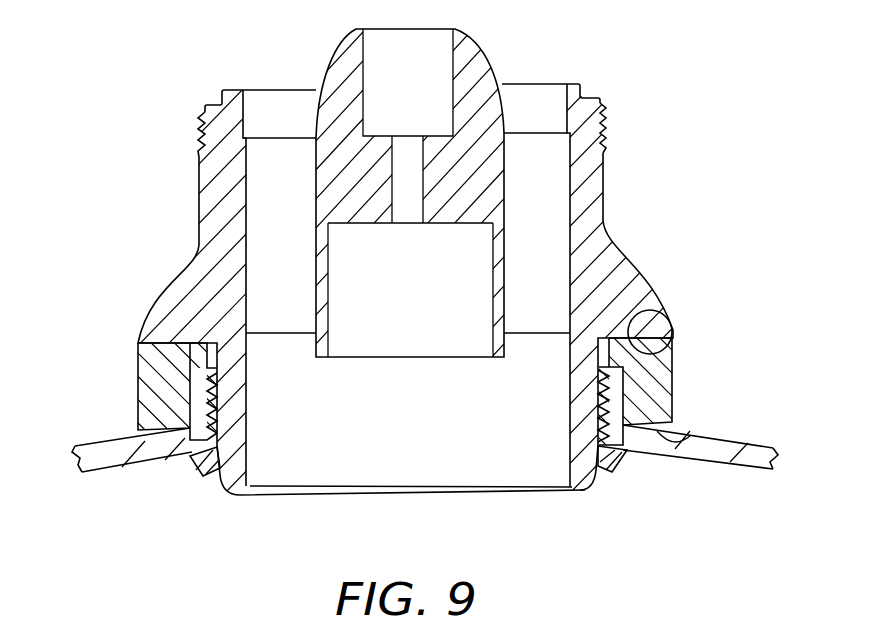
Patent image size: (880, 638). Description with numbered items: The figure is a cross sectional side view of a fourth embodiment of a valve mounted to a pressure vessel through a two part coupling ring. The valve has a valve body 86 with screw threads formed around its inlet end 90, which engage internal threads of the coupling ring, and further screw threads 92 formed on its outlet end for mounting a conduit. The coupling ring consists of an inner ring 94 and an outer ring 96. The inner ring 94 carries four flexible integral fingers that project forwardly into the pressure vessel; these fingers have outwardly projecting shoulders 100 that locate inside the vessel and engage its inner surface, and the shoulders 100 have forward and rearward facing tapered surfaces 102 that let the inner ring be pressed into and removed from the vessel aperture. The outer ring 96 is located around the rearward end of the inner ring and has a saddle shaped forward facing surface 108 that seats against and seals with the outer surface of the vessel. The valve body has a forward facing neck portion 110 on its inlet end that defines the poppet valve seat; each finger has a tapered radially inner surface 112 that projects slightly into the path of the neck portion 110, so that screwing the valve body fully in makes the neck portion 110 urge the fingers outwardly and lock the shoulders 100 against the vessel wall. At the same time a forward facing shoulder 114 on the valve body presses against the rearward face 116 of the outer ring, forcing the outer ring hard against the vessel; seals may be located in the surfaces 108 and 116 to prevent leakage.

The valve body 86 is at (595, 190).
The inlet end 90 is at (234, 496).
The screw threads 92 is at (605, 122).
The inner ring 94 is at (197, 400).
The outer ring 96 is at (148, 362).
The outwardly projecting shoulders 100 is at (185, 466).
The tapered surfaces 102 is at (623, 465).
The saddle shaped forward facing surface 108 is at (680, 437).
The neck portion 110 is at (585, 486).
The radially inner surface 112 is at (222, 485).
The forward facing shoulder 114 is at (673, 348).
The rearward face 116 is at (648, 318).